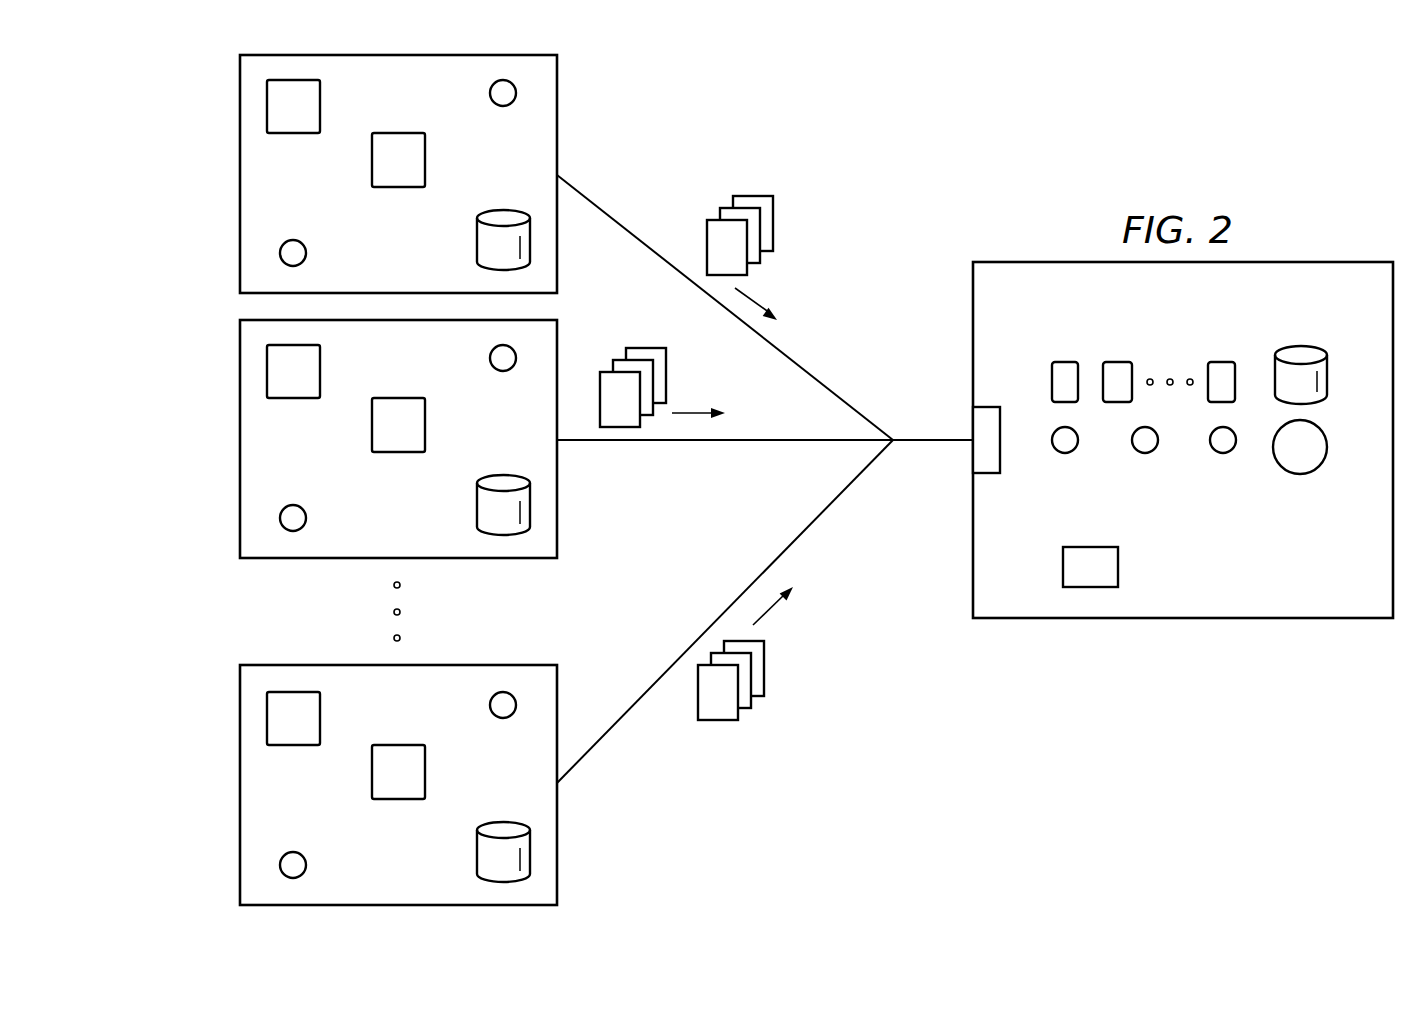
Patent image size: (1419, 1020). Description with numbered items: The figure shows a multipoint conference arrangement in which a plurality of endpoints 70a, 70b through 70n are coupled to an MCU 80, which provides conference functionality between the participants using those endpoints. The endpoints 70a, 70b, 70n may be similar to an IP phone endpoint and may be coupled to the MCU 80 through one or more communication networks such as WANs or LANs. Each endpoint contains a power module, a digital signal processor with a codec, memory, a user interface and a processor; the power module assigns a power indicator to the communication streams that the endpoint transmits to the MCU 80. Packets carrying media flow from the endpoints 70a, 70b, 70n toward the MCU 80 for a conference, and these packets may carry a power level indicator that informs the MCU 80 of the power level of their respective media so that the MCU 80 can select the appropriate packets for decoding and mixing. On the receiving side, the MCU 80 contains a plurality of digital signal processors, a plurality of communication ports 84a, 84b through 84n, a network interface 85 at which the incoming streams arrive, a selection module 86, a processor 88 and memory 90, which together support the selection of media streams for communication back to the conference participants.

The endpoint 70a is at (232, 170).
The endpoint 70b is at (232, 435).
The endpoint 70n is at (230, 790).
The MCU 80 is at (1184, 630).
The communication port 84a is at (1064, 362).
The communication port 84b is at (1117, 362).
The communication port 84n is at (1223, 362).
The network interface 85 is at (985, 406).
The selection module 86 is at (1118, 565).
The processor 88 is at (1300, 474).
The memory 90 is at (1300, 347).